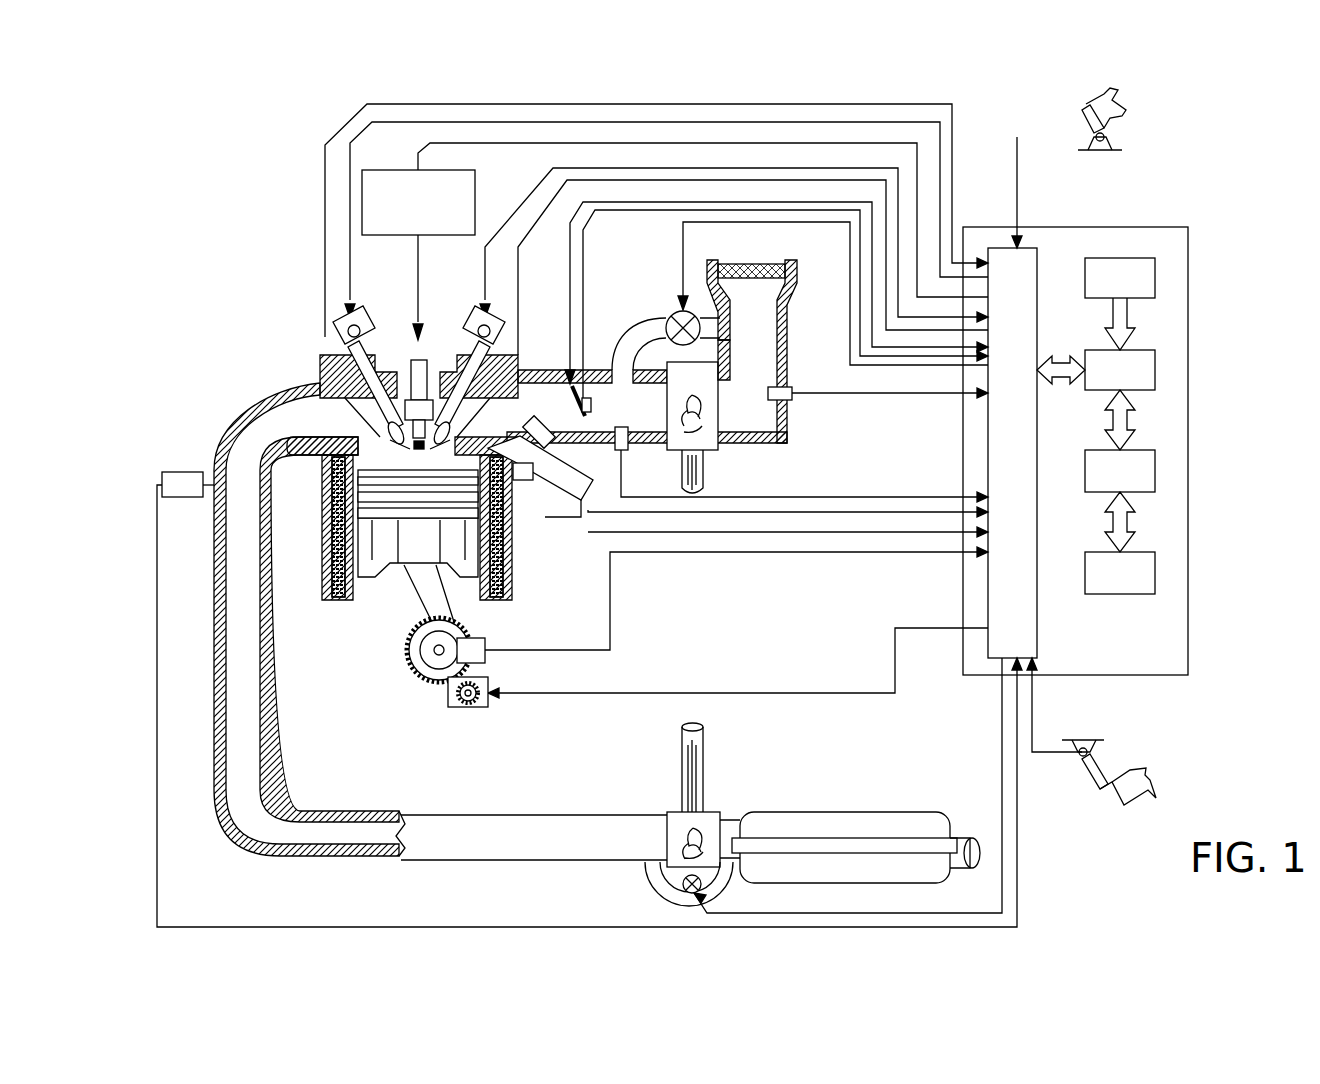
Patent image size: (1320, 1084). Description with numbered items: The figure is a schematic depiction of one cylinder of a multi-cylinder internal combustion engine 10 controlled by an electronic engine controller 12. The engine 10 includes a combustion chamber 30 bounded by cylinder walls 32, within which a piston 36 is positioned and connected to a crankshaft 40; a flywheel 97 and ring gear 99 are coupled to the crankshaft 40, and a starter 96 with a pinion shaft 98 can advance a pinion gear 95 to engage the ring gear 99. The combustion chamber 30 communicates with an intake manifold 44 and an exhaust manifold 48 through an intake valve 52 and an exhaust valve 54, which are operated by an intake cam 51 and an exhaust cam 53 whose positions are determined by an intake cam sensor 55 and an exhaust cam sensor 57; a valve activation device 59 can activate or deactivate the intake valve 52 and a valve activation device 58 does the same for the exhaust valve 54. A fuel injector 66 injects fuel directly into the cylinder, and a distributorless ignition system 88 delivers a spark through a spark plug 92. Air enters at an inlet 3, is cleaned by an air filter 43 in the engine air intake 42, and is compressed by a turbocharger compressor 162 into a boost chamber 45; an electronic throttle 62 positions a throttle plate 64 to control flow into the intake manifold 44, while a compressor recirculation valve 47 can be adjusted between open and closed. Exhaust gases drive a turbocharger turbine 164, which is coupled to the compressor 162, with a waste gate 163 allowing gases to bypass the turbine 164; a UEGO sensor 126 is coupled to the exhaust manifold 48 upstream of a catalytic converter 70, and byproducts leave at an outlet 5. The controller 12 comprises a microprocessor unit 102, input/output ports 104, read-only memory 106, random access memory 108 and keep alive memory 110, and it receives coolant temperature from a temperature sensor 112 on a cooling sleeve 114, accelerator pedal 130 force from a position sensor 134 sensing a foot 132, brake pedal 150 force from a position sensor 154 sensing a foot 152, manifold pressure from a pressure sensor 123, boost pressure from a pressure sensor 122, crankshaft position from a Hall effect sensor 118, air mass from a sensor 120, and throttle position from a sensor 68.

The internal combustion engine 10 is at (257, 309).
The electronic engine controller 12 is at (1188, 228).
The inlet 3 is at (759, 339).
The outlet 5 is at (970, 832).
The combustion chamber 30 is at (440, 537).
The cylinder walls 32 is at (352, 602).
The piston 36 is at (400, 562).
The crankshaft 40 is at (418, 682).
The engine air intake 42 is at (662, 279).
The air filter 43 is at (740, 278).
The intake manifold 44 is at (592, 391).
The boost chamber 45 is at (647, 421).
The compressor recirculation valve 47 is at (670, 315).
The exhaust manifold 48 is at (440, 621).
The intake cam 51 is at (472, 352).
The intake valve 52 is at (455, 428).
The exhaust cam 53 is at (360, 310).
The exhaust valve 54 is at (385, 430).
The intake cam sensor 55 is at (497, 322).
The exhaust cam sensor 57 is at (344, 353).
The valve activation device 58 is at (368, 338).
The valve activation device 59 is at (472, 372).
The electronic throttle 62 is at (589, 400).
The throttle plate 64 is at (580, 412).
The fuel injector 66 is at (550, 466).
The throttle position sensor 68 is at (597, 376).
The catalytic converter 70 is at (850, 831).
The distributorless ignition system 88 is at (378, 170).
The spark plug 92 is at (418, 350).
The pinion gear 95 is at (478, 708).
The starter 96 is at (464, 714).
The flywheel 97 is at (412, 657).
The pinion shaft 98 is at (463, 706).
The ring gear 99 is at (432, 686).
The microprocessor unit 102 is at (1155, 375).
The input/output ports 104 is at (1037, 257).
The read-only memory 106 is at (1155, 275).
The random access memory 108 is at (1155, 472).
The keep alive memory 110 is at (1155, 574).
The temperature sensor 112 is at (515, 480).
The cooling sleeve 114 is at (497, 550).
The Hall effect sensor 118 is at (485, 640).
The air mass sensor 120 is at (785, 387).
The pressure sensor 122 is at (624, 450).
The pressure sensor 123 is at (550, 445).
The UEGO sensor 126 is at (165, 478).
The accelerator pedal 130 is at (1133, 117).
The foot 132 is at (1122, 108).
The position sensor 134 is at (1115, 137).
The brake pedal 150 is at (1097, 767).
The foot 152 is at (1146, 768).
The position sensor 154 is at (1076, 748).
The turbocharger compressor 162 is at (715, 427).
The waste gate 163 is at (684, 894).
The turbocharger turbine 164 is at (686, 795).